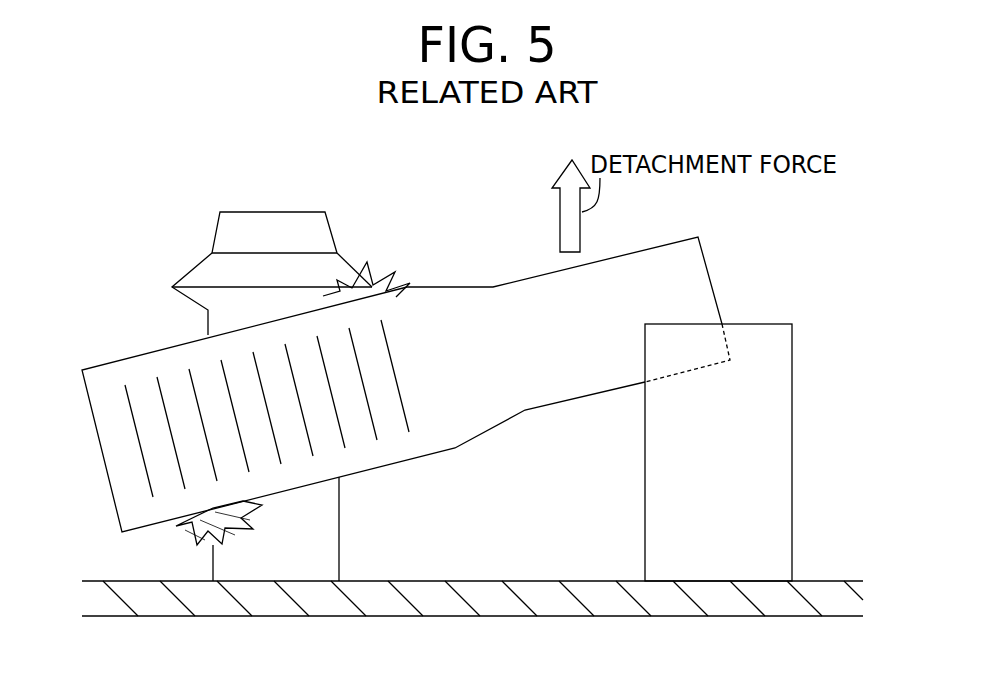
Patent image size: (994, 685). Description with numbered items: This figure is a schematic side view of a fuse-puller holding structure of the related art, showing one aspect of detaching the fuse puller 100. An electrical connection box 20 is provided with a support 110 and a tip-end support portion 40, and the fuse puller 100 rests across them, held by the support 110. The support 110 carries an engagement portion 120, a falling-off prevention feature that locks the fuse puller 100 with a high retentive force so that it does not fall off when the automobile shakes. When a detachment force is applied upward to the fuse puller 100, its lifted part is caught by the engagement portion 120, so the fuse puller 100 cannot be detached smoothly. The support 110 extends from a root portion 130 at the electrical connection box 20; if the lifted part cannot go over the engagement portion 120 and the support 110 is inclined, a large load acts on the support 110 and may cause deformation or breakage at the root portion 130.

The electrical connection box 20 is at (820, 578).
The tip-end support portion 40 is at (793, 385).
The fuse puller 100 is at (623, 254).
The support 110 is at (313, 211).
The engagement portion 120 is at (181, 274).
The root portion 130 is at (341, 551).